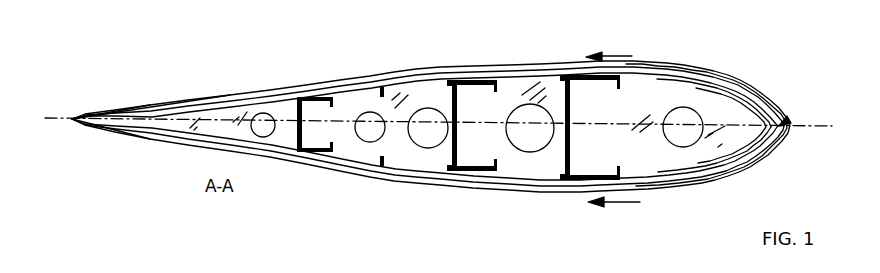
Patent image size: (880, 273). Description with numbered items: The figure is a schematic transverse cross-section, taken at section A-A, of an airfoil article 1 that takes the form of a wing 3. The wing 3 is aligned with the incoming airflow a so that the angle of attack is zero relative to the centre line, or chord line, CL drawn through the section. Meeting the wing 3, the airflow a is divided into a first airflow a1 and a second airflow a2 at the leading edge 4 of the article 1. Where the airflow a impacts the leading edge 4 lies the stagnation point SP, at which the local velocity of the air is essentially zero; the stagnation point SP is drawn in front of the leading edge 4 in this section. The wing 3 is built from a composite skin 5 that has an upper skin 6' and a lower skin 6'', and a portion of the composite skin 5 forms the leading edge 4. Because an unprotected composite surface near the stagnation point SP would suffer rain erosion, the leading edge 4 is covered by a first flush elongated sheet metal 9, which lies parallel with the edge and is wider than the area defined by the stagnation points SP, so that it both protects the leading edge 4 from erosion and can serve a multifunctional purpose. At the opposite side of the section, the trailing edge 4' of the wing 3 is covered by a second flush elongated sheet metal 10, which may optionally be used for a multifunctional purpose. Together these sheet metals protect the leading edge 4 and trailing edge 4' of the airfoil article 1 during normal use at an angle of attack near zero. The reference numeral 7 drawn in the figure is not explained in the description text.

The airfoil article 1 is at (526, 52).
The wing 3 is at (382, 183).
The leading edge 4 is at (706, 137).
The trailing edge 4' is at (109, 93).
The composite skin 5 is at (643, 64).
The upper skin 6' is at (428, 81).
The lower skin 6'' is at (428, 165).
The skin layer 7 is at (203, 97).
The first sheet metal 9 is at (738, 170).
The second sheet metal 10 is at (88, 128).
The airflow a is at (809, 146).
The first airflow a1 is at (787, 118).
The second airflow a2 is at (654, 190).
The stagnation point SP is at (786, 120).
The centre line (chord line) CL is at (282, 114).